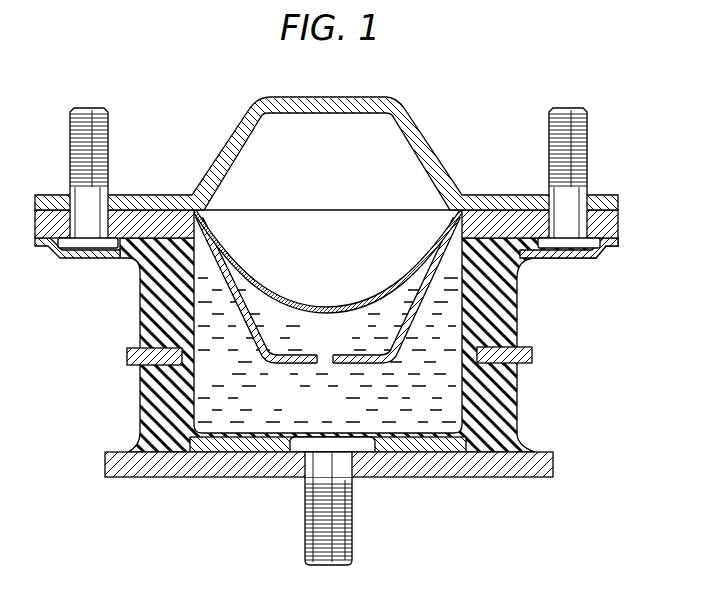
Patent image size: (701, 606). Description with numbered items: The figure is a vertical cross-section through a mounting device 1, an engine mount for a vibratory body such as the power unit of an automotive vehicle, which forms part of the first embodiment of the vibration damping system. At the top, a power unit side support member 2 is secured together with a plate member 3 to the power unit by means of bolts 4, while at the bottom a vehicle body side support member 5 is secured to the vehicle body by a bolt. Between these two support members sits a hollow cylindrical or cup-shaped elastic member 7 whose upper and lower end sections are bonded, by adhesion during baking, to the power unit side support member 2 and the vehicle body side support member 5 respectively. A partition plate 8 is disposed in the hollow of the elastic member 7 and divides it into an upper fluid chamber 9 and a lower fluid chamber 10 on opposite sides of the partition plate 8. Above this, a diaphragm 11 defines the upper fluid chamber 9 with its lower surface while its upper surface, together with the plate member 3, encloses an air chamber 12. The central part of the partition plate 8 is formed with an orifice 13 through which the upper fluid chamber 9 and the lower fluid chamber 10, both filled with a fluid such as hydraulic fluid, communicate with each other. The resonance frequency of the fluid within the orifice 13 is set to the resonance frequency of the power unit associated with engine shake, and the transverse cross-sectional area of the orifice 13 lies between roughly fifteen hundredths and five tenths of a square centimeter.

The mounting device 1 is at (230, 104).
The power unit side support member 2 is at (614, 221).
The plate member 3 is at (383, 105).
The bolts 4 is at (587, 143).
The vehicle body side support member 5 is at (460, 464).
The elastic member 7 is at (512, 407).
The partition plate 8 is at (244, 339).
The upper fluid chamber 9 is at (337, 348).
The lower fluid chamber 10 is at (342, 415).
The diaphragm 11 is at (269, 297).
The air chamber 12 is at (341, 186).
The orifice 13 is at (322, 366).